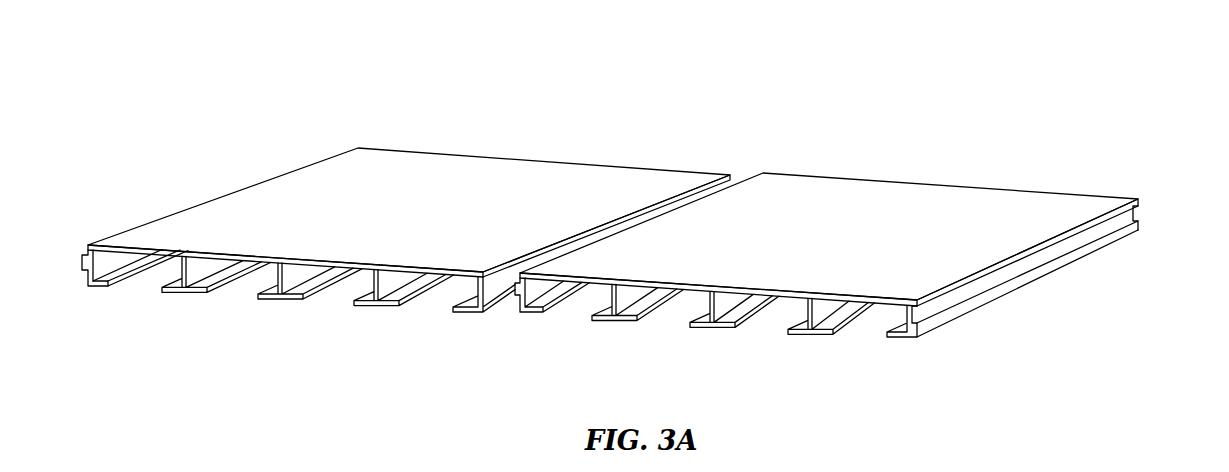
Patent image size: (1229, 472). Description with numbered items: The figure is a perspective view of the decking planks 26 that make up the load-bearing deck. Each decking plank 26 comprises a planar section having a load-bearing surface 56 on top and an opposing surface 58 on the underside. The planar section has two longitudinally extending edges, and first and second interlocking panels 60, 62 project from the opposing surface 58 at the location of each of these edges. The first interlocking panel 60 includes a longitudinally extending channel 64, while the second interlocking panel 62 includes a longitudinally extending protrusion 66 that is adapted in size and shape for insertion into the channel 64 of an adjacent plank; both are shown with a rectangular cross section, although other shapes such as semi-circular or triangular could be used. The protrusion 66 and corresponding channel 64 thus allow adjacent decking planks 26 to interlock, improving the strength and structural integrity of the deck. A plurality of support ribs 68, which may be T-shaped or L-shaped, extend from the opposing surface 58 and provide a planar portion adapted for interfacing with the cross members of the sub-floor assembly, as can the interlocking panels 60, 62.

The decking plank 26 is at (820, 176).
The load-bearing surface 56 is at (913, 228).
The opposing surface 58 is at (900, 307).
The first interlocking panel 60 is at (1030, 283).
The second interlocking panel 62 is at (518, 310).
The longitudinally extending channel 64 is at (1143, 218).
The longitudinally extending protrusion 66 is at (508, 300).
The support ribs 68 is at (730, 330).